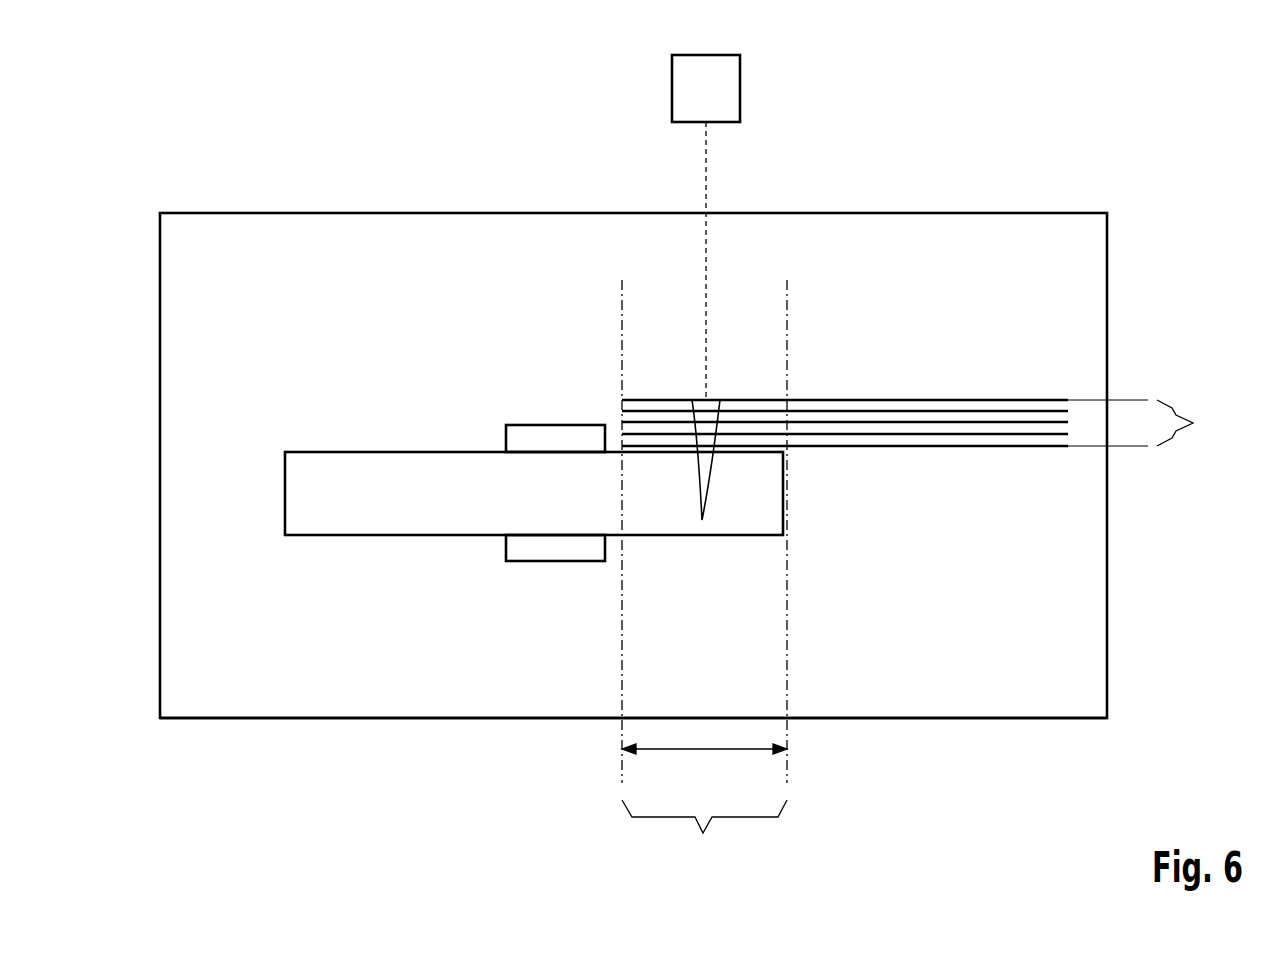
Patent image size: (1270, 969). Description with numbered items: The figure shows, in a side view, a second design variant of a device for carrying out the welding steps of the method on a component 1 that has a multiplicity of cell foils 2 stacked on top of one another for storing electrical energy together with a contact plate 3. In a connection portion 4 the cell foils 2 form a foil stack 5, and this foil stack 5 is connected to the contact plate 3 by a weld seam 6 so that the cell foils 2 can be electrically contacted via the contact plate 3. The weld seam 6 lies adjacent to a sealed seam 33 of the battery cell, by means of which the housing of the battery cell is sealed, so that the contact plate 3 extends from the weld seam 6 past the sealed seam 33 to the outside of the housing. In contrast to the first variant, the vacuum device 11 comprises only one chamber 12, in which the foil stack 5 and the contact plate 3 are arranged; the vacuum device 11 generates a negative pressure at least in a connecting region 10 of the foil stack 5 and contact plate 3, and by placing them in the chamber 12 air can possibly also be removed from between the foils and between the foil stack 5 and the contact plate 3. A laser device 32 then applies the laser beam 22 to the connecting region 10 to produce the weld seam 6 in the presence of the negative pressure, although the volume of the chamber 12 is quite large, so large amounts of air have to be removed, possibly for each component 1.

The component 1 is at (978, 146).
The cell foils 2 is at (915, 447).
The contact plate 3 is at (428, 475).
The connection portion 4 is at (700, 749).
The foil stack 5 is at (1142, 423).
The weld seam 6 is at (700, 417).
The connecting region 10 is at (704, 576).
The vacuum device 11 is at (922, 692).
The chamber 12 is at (362, 692).
The laser beam 22 is at (706, 175).
The laser device 32 is at (720, 78).
The sealed seam 33 is at (558, 440).